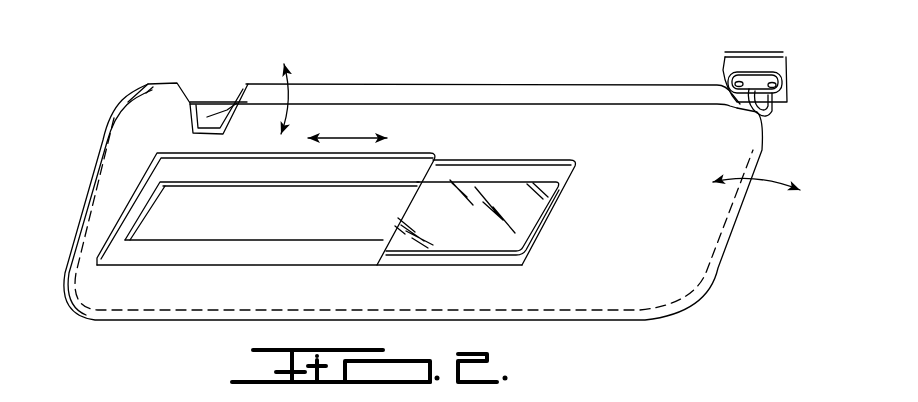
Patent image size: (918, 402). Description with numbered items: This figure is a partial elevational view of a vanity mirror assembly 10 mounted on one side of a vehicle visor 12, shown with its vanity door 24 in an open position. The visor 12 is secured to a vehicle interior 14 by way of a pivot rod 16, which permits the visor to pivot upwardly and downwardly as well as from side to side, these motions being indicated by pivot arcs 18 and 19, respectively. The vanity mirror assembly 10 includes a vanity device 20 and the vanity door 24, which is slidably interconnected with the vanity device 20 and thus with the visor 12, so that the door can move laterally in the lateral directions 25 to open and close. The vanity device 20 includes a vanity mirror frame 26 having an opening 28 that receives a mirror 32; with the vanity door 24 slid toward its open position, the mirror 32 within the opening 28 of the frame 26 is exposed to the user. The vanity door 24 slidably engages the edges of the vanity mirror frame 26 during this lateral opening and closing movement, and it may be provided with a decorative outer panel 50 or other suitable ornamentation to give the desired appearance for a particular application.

The vanity mirror assembly 10 is at (360, 207).
The vehicle visor 12 is at (724, 262).
The vehicle interior 14 is at (751, 53).
The pivot rod 16 is at (766, 119).
The pivot arc 18 is at (291, 93).
The pivot arc 19 is at (722, 190).
The vanity device 20 is at (493, 241).
The vanity door 24 is at (335, 268).
The lateral directions 25 is at (351, 138).
The vanity mirror frame 26 is at (360, 228).
The opening 28 is at (449, 242).
The mirror 32 is at (473, 231).
The decorative outer panel 50 is at (222, 221).